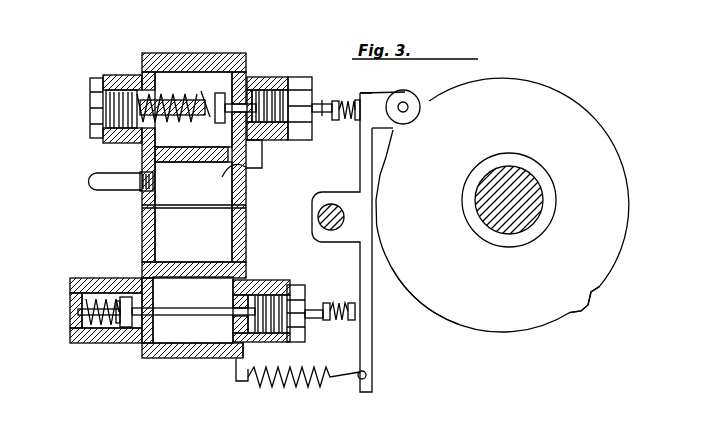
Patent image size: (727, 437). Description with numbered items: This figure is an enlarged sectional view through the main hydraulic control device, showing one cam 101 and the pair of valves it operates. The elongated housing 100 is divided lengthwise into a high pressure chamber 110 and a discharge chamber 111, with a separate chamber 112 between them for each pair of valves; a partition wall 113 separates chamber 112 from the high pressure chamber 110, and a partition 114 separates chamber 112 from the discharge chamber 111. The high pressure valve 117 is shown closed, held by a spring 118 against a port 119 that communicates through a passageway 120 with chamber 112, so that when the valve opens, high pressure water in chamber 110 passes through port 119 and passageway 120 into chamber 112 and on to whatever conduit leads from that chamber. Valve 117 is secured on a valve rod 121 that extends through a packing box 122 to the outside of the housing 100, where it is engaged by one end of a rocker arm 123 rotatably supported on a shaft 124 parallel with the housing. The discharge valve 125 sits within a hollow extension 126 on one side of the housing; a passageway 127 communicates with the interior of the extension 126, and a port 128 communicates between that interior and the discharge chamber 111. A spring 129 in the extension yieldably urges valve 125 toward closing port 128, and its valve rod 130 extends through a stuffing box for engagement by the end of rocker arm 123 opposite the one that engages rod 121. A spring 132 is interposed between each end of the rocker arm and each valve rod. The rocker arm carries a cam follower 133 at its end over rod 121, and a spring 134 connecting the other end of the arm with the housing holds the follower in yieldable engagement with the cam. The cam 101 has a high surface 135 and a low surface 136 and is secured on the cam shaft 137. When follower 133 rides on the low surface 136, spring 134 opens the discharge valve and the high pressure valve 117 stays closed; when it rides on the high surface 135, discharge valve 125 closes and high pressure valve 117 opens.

The housing 100 is at (140, 153).
The cam 101 is at (600, 256).
The high pressure chamber 110 is at (167, 80).
The discharge chamber 111 is at (167, 338).
The chamber 112 is at (173, 227).
The partition wall 113 is at (247, 167).
The partition 114 is at (188, 266).
The high pressure valve 117 is at (243, 82).
The spring 118 is at (214, 116).
The port 119 is at (243, 125).
The passageway 120 is at (253, 142).
The valve rod 121 is at (323, 117).
The packing box 122 is at (310, 98).
The rocker arm 123 is at (356, 170).
The shaft 124 is at (318, 217).
The discharge valve 125 is at (117, 340).
The hollow extension 126 is at (86, 343).
The passageway 127 is at (145, 270).
The port 128 is at (148, 303).
The spring 129 is at (80, 305).
The valve rod 130 is at (194, 312).
The spring 132 is at (347, 100).
The cam follower 133 is at (416, 98).
The spring 134 is at (297, 383).
The high surface 135 is at (421, 304).
The low surface 136 is at (602, 118).
The cam shaft 137 is at (538, 190).